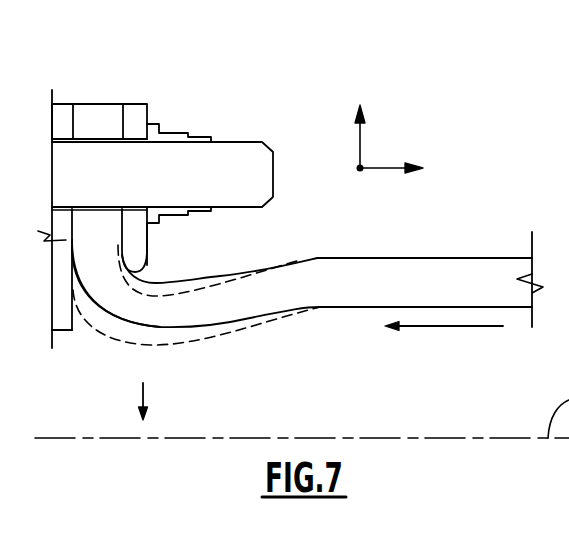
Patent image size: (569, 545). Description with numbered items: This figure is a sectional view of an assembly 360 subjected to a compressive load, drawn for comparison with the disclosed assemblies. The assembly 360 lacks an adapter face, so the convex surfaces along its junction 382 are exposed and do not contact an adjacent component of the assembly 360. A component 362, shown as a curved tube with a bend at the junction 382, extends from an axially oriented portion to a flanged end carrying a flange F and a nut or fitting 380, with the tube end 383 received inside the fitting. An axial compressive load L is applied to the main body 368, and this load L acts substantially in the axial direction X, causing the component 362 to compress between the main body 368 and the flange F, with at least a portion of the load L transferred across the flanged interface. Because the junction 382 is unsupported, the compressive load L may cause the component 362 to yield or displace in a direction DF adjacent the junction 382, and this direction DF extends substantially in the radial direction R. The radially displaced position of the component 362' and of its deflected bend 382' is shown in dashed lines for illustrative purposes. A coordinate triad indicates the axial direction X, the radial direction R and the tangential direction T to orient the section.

The assembly 360 is at (70, 89).
The nut 380 is at (147, 99).
The flange F is at (254, 142).
The inner tube end 383 is at (148, 290).
The component 362 is at (318, 252).
The main body 368 is at (483, 273).
The component 362' is at (214, 262).
The junction 382 is at (110, 317).
The deflected pipe bend 382' is at (196, 347).
The compressive load L is at (442, 326).
The direction of displacement DF is at (138, 391).
The radial direction R is at (359, 125).
The axial direction X is at (401, 170).
The tangential axis T is at (355, 173).